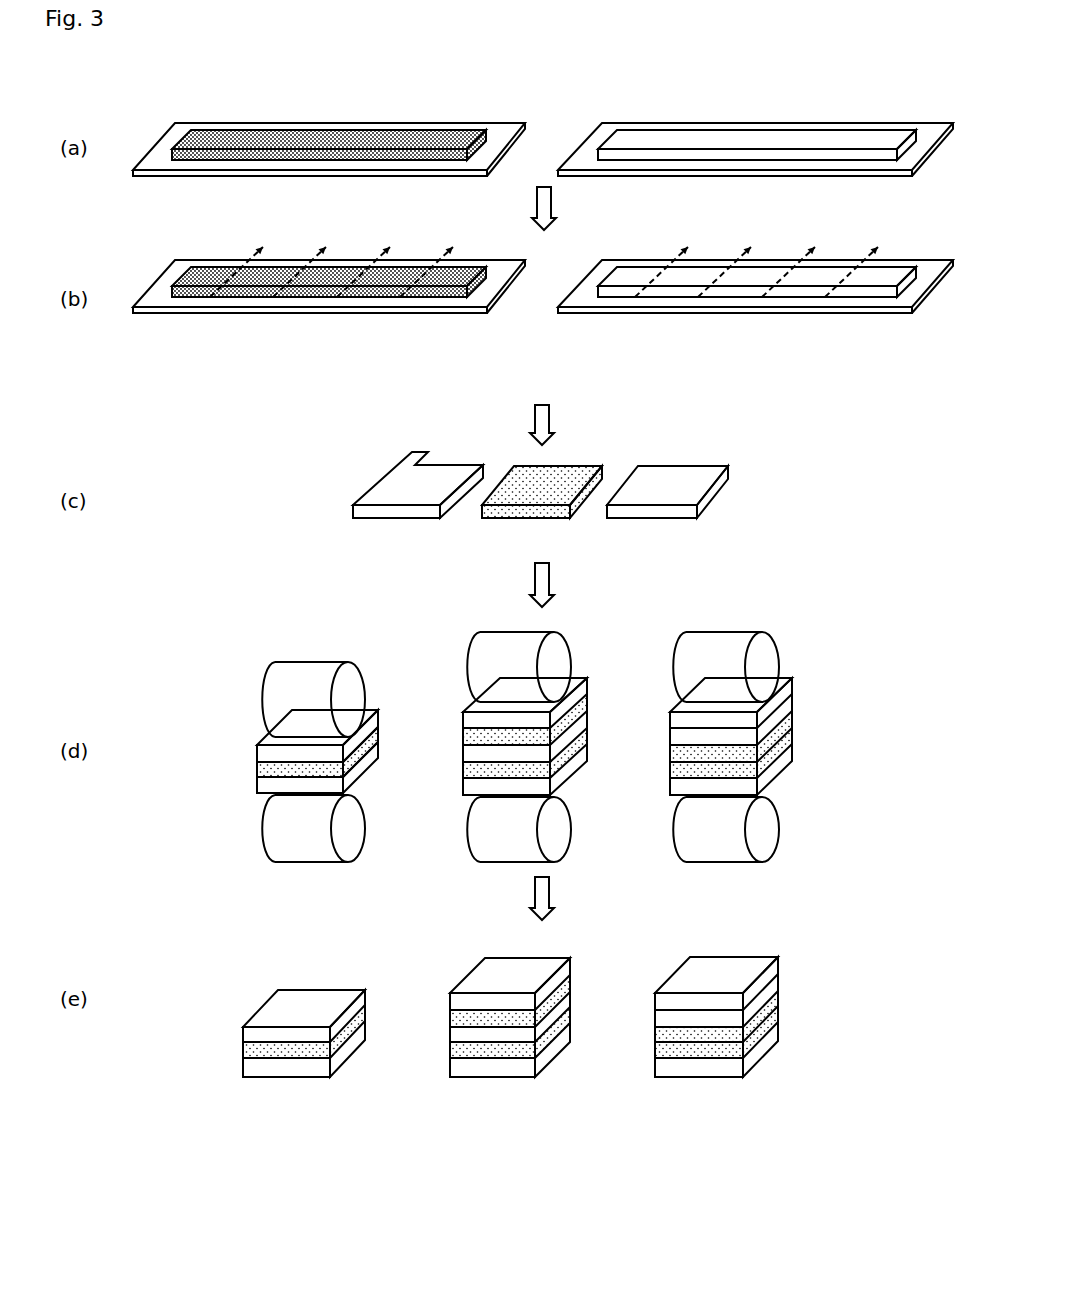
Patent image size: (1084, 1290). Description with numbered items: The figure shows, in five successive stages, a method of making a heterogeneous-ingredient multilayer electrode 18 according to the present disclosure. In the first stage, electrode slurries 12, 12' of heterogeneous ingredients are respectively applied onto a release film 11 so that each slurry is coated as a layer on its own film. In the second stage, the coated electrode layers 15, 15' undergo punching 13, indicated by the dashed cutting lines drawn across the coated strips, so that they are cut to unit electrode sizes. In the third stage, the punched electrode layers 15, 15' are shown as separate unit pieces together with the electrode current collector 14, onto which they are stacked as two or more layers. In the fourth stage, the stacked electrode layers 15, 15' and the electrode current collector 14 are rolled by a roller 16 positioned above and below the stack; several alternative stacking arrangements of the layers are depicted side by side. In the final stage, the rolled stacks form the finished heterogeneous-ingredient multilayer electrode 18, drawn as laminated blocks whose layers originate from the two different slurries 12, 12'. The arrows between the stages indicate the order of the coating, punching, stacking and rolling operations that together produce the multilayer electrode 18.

The release film 11 is at (500, 133).
The electrode slurry 12 is at (329, 123).
The electrode slurry 12' is at (757, 123).
The punching 13 is at (438, 258).
The electrode current collector 14 is at (395, 483).
The electrode layer 15 is at (435, 621).
The electrode layer 15' is at (492, 614).
The roller 16 is at (348, 690).
The heterogeneous-ingredient multilayer electrode 18 is at (278, 1095).